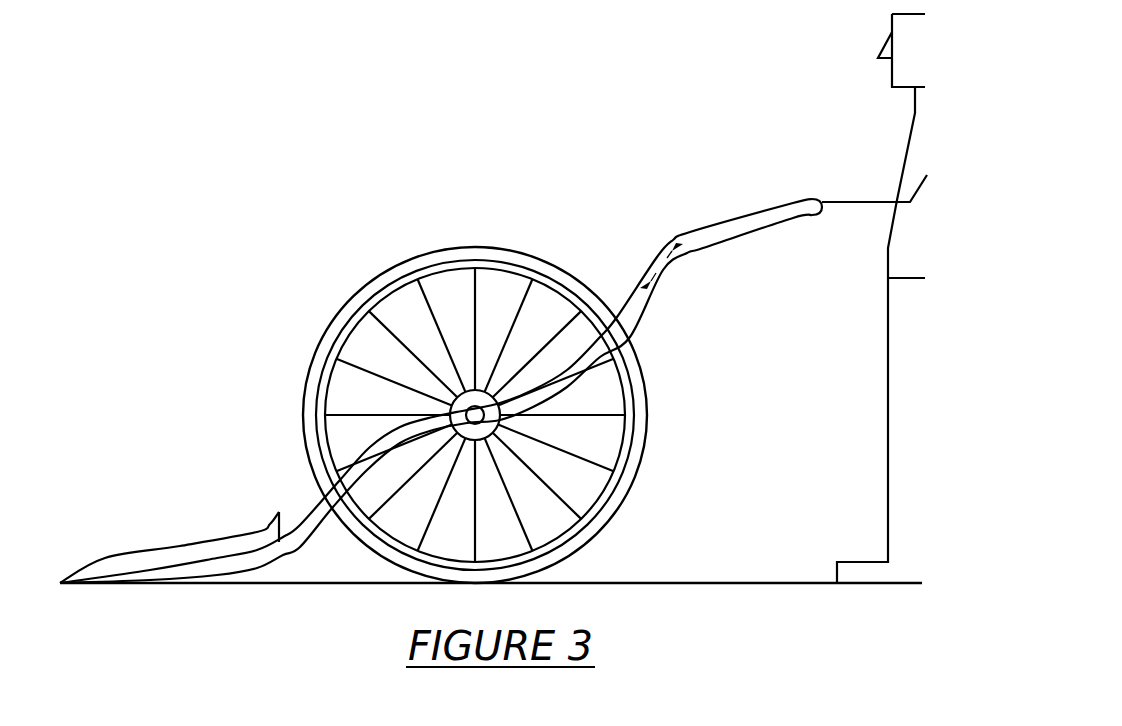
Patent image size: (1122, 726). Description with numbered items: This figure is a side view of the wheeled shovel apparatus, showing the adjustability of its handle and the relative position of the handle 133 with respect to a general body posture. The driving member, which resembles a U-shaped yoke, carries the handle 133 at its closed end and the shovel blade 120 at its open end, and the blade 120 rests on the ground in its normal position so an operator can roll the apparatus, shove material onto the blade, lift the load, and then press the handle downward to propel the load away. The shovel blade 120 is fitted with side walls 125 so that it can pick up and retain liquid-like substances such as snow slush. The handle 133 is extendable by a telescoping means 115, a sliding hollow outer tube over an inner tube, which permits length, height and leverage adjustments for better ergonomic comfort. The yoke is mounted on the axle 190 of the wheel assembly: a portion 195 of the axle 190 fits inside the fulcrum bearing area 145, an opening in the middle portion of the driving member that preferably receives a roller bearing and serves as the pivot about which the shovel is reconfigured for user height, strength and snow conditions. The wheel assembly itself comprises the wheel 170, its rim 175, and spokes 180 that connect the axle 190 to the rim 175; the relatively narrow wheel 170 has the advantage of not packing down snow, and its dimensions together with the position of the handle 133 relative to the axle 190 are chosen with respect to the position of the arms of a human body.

The telescoping means 115 is at (665, 268).
The shovel blade 120 is at (295, 530).
The side walls 125 is at (185, 545).
The handle 133 is at (778, 213).
The fulcrum bearing area 145 is at (478, 410).
The wheel 170 is at (485, 255).
The rim 175 is at (447, 267).
The spokes 180 is at (420, 297).
The axle 190 is at (367, 307).
The portion of axle 195 is at (590, 310).